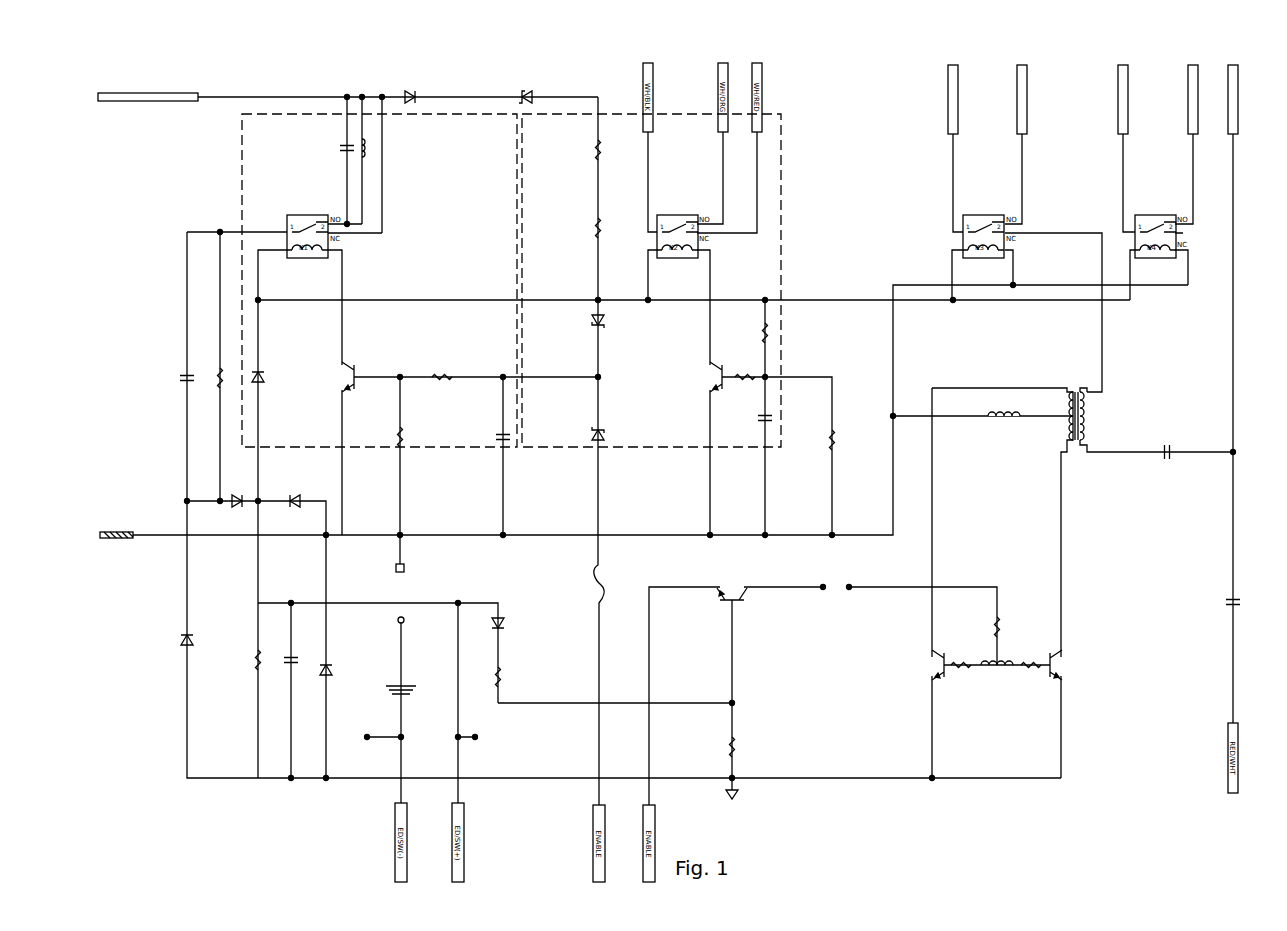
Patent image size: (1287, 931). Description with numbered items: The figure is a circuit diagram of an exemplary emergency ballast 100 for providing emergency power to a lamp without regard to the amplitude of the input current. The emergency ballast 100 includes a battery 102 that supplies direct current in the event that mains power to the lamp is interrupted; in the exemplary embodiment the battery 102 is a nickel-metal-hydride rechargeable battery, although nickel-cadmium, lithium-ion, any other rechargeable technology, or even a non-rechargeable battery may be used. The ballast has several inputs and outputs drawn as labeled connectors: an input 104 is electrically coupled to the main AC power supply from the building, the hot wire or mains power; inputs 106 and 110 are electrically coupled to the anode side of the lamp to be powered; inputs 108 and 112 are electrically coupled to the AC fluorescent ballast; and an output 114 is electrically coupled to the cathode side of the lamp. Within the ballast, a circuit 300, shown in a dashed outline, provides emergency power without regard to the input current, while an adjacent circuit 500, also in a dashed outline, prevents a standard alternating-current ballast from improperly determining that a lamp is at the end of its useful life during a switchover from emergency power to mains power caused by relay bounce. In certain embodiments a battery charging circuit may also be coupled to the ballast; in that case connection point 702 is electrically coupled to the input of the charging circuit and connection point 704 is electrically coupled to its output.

The emergency ballast 100 is at (262, 787).
The battery 102 is at (385, 691).
The input 104 is at (215, 99).
The input 106 is at (958, 95).
The input 108 is at (1027, 105).
The input 110 is at (1128, 105).
The input 112 is at (1198, 95).
The output 114 is at (1238, 123).
The circuit 300 is at (300, 114).
The circuit 500 is at (630, 114).
The connection point 702 is at (404, 568).
The connection point 704 is at (404, 622).